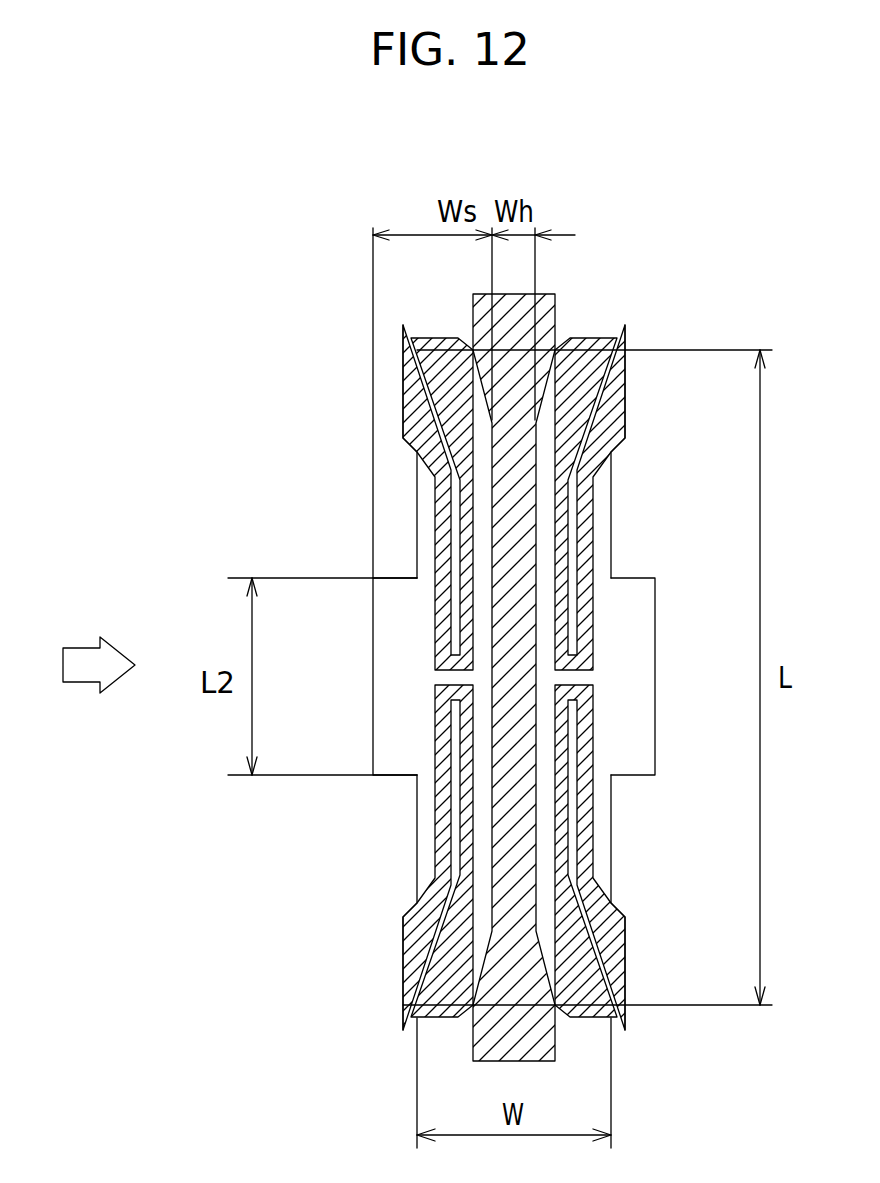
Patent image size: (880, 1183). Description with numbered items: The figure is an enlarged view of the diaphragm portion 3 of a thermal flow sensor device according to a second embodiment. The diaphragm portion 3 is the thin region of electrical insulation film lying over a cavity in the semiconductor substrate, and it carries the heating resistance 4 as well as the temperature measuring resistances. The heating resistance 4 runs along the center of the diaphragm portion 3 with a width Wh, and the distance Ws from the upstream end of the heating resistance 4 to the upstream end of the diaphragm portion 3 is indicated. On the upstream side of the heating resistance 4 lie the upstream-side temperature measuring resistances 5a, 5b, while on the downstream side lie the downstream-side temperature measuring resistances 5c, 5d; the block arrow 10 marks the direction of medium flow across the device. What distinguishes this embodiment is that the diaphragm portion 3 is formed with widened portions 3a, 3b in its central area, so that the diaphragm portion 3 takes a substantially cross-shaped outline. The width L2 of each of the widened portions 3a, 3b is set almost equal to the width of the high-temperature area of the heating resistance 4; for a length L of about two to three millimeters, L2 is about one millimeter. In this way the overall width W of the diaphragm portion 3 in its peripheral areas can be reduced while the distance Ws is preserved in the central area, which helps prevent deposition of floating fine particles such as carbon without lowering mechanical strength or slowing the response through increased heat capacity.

The diaphragm portion 3 is at (612, 479).
The widened portion 3a is at (405, 675).
The widened portion 3b is at (637, 675).
The heating resistance 4 is at (520, 522).
The upstream-side temperature measuring resistance 5a is at (417, 553).
The upstream-side temperature measuring resistance 5b is at (435, 828).
The downstream-side temperature measuring resistance 5c is at (590, 547).
The downstream-side temperature measuring resistance 5d is at (590, 805).
The flow direction 10 is at (78, 648).